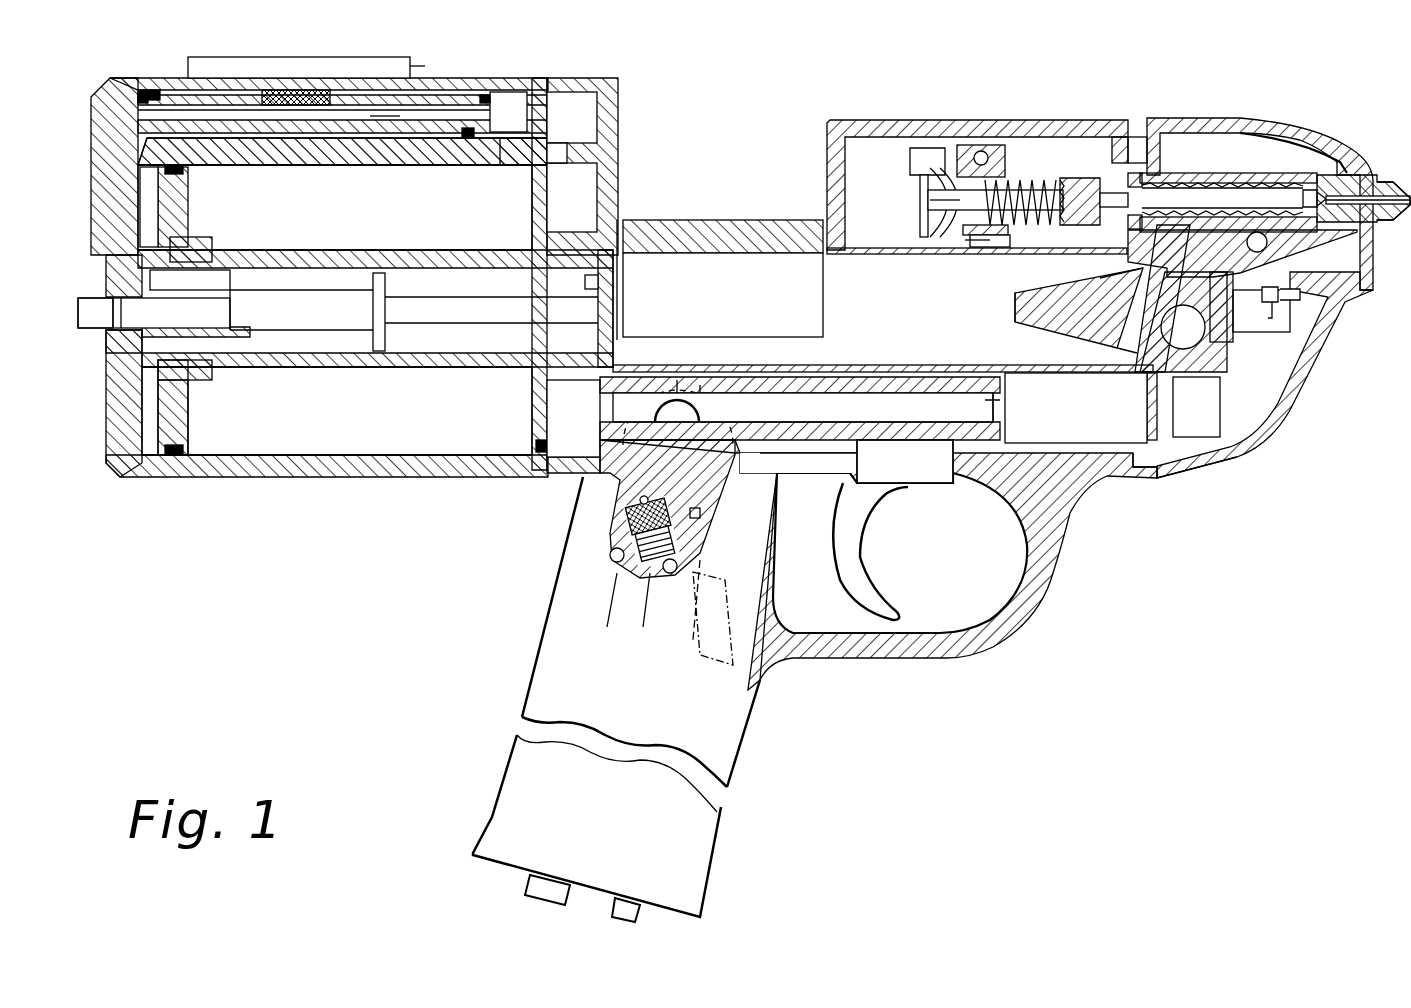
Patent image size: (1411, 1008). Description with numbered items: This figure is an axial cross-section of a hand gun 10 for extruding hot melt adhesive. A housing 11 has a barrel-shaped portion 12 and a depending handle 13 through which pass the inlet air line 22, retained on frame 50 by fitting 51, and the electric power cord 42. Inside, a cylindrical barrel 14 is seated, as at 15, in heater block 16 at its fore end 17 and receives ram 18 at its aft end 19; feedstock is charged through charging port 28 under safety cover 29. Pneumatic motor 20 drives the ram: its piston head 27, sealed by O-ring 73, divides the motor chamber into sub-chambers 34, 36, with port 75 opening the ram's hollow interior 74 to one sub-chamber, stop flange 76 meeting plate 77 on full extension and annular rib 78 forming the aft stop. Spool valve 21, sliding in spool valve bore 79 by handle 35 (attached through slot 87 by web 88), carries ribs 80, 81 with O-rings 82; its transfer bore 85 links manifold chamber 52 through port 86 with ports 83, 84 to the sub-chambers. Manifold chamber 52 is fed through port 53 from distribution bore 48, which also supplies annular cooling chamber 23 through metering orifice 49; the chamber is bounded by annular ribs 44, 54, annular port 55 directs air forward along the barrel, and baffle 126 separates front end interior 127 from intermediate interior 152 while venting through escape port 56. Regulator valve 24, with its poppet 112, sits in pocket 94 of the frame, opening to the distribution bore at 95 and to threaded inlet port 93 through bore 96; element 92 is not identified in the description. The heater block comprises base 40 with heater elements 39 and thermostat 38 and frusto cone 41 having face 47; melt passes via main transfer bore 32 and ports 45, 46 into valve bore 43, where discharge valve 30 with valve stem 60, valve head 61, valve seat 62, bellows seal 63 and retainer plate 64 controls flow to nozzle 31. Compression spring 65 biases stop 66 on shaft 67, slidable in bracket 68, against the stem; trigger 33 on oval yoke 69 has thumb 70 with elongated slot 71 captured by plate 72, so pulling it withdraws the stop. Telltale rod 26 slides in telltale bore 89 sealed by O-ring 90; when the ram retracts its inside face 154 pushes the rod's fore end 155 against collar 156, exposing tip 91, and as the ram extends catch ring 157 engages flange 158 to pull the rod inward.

The hand gun 10 is at (1166, 755).
The housing 11 is at (1238, 458).
The barrel-shaped portion 12 is at (1060, 118).
The handle 13 is at (750, 757).
The barrel 14 is at (880, 248).
The seat 15 is at (1140, 376).
The heater block 16 is at (1225, 368).
The fore end 17 is at (1082, 376).
The ram 18 is at (618, 282).
The aft end 19 is at (625, 366).
The pneumatic motor 20 is at (300, 460).
The spool valve 21 is at (357, 150).
The inlet air line 22 is at (578, 598).
The cooling chamber 23 is at (975, 250).
The regulator valve 24 is at (700, 412).
The telltale rod 26 is at (312, 330).
The piston head 27 is at (188, 420).
The charging port 28 is at (828, 287).
The safety cover 29 is at (750, 235).
The discharge valve 30 is at (1325, 176).
The nozzle 31 is at (1402, 178).
The main transfer bore 32 is at (1160, 292).
The trigger 33 is at (910, 497).
The sub-chamber 34 is at (190, 205).
The spool valve handle 35 is at (350, 66).
The sub-chamber 36 is at (335, 207).
The thermostat 38 is at (1196, 407).
The heater elements 39 is at (1262, 292).
The base 40 is at (1261, 311).
The frusto cone 41 is at (1079, 310).
The electric power cord 42 is at (690, 640).
The valve bore 43 is at (1215, 234).
The annular rib 44 is at (955, 250).
The port 45 is at (1125, 270).
The port 46 is at (1130, 358).
The frusto cone face 47 is at (1013, 308).
The distribution bore 48 is at (800, 408).
The metering orifice 49 is at (985, 405).
The frame 50 is at (690, 503).
The fitting 51 is at (705, 575).
The manifold chamber 52 is at (590, 195).
The port 53 is at (573, 418).
The annular rib 54 is at (1005, 232).
The annular port 55 is at (990, 247).
The escape port 56 is at (1138, 137).
The valve stem 60 is at (1245, 193).
The valve head 61 is at (1300, 218).
The valve seat 62 is at (1325, 185).
The bellows seal 63 is at (1248, 232).
The retainer plate 64 is at (1130, 228).
The compression spring 65 is at (1015, 185).
The stop 66 is at (1075, 178).
The shaft 67 is at (1000, 190).
The bracket 68 is at (980, 145).
The oval yoke 69 is at (937, 470).
The thumb 70 is at (910, 165).
The elongated slot 71 is at (930, 205).
The plate 72 is at (920, 187).
The O-ring 73 is at (175, 458).
The hollow interior 74 is at (430, 352).
The port 75 is at (180, 280).
The stop flange 76 is at (212, 248).
The plate 77 is at (536, 238).
The annular rib 78 is at (182, 228).
The spool valve bore 79 is at (505, 95).
The rib 80 is at (150, 92).
The rib 81 is at (468, 140).
The O-ring 82 is at (143, 96).
The port 83 is at (178, 172).
The port 84 is at (512, 160).
The transfer bore 85 is at (385, 130).
The port 86 is at (542, 115).
The slot 87 is at (428, 66).
The web 88 is at (300, 92).
The telltale bore 89 is at (140, 312).
The O-ring 90 is at (107, 340).
The tip 91 is at (93, 320).
The valve 92 is at (685, 527).
The threaded inlet port 93 is at (612, 550).
The pocket 94 is at (705, 400).
The opening 95 is at (690, 420).
The bore 96 is at (733, 507).
The poppet 112 is at (680, 400).
The baffle 126 is at (1150, 468).
The front end interior 127 is at (1253, 408).
The intermediate interior 152 is at (1072, 435).
The inside face 154 is at (585, 284).
The fore end 155 is at (560, 318).
The collar 156 is at (238, 348).
The catch ring 157 is at (242, 368).
The flange 158 is at (375, 340).